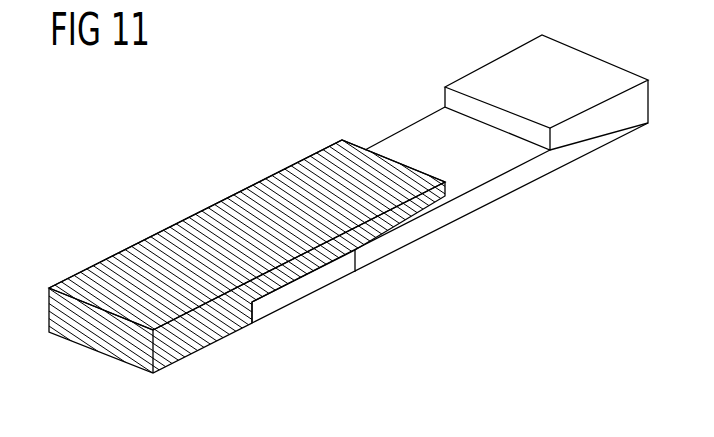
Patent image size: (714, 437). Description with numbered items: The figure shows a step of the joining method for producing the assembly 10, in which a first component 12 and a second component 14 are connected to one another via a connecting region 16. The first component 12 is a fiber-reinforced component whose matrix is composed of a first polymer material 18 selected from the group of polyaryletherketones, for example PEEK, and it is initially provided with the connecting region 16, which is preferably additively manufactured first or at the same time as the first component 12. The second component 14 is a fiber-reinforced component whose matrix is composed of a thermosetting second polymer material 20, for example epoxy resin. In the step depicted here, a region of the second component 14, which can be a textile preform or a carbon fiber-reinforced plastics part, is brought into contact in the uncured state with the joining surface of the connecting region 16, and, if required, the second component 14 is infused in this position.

The assembly 10 is at (236, 166).
The first component 12 is at (466, 52).
The second component 14 is at (110, 281).
The connecting region 16 is at (423, 218).
The first polymer material 18 is at (403, 143).
The second polymer material 20 is at (167, 243).